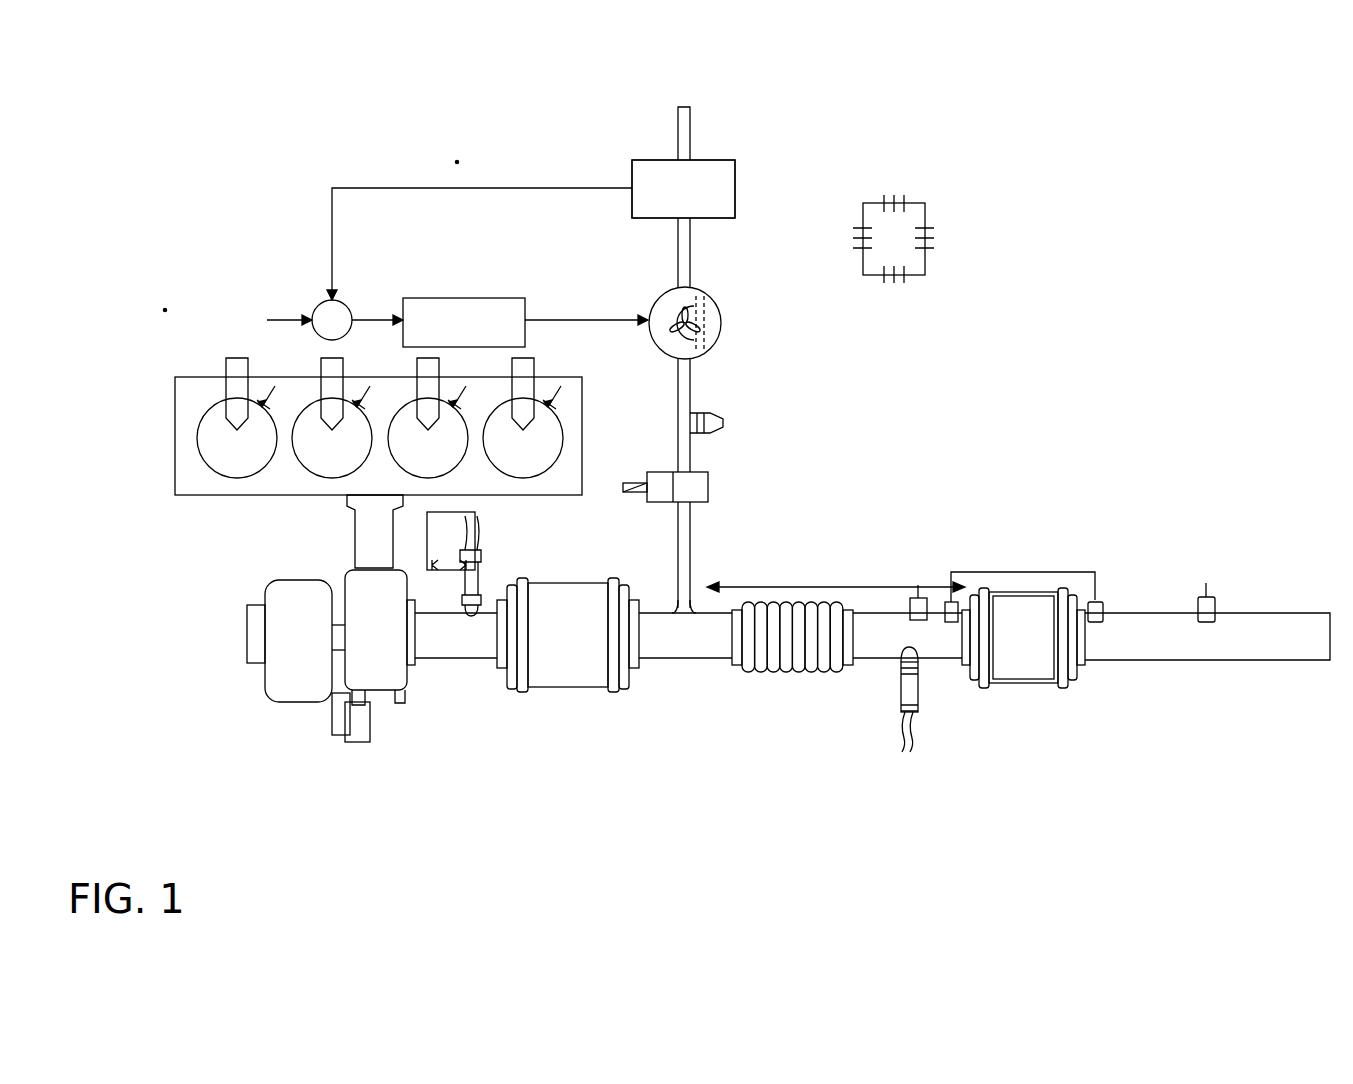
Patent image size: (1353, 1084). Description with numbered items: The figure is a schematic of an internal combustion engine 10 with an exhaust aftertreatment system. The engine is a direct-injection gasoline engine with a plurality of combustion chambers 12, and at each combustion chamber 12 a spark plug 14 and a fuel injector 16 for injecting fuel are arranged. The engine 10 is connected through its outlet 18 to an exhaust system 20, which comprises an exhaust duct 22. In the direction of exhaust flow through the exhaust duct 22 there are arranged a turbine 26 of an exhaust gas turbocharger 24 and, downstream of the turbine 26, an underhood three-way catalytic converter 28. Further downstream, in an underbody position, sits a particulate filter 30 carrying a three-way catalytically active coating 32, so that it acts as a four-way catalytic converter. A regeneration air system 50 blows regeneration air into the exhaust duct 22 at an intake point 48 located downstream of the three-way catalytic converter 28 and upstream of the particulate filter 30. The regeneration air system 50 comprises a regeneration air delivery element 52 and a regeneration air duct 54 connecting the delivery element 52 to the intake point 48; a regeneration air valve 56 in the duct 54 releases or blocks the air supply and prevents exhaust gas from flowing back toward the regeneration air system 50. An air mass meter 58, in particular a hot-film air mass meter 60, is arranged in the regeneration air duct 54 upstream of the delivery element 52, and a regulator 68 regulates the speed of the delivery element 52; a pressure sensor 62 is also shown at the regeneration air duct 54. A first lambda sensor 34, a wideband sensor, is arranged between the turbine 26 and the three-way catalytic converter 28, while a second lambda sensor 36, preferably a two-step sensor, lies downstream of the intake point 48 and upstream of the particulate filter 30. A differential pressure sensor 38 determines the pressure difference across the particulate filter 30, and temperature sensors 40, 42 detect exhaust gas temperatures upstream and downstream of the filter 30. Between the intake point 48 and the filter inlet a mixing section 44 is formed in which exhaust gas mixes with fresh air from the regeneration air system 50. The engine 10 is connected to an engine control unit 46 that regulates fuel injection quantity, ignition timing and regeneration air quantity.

The internal combustion engine 10 is at (177, 442).
The combustion chamber 12 is at (226, 476).
The spark plug 14 is at (262, 392).
The fuel injector 16 is at (236, 392).
The outlet 18 is at (378, 497).
The exhaust system 20 is at (1212, 518).
The exhaust duct 22 is at (448, 650).
The exhaust gas turbocharger 24 is at (331, 705).
The turbine 26 is at (375, 672).
The three-way catalytic converter 28 is at (566, 672).
The particulate filter 30 is at (1023, 668).
The three-way catalytically active coating 32 is at (1037, 604).
The first lambda sensor 34 is at (479, 585).
The second lambda sensor 36 is at (900, 706).
The differential pressure sensor 38 is at (1102, 604).
The temperature sensor 40 is at (920, 612).
The temperature sensor 42 is at (1214, 600).
The mixing section 44 is at (836, 574).
The engine control unit 46 is at (916, 212).
The intake point 48 is at (690, 614).
The regeneration air system 50 is at (824, 148).
The regeneration air delivery element 52 is at (719, 312).
The regeneration air duct 54 is at (692, 392).
The regeneration air valve 56 is at (709, 493).
The air mass meter 58 is at (709, 161).
The hot-film air mass meter 60 is at (710, 172).
The pressure sensor 62 is at (726, 424).
The regulator 68 is at (462, 312).